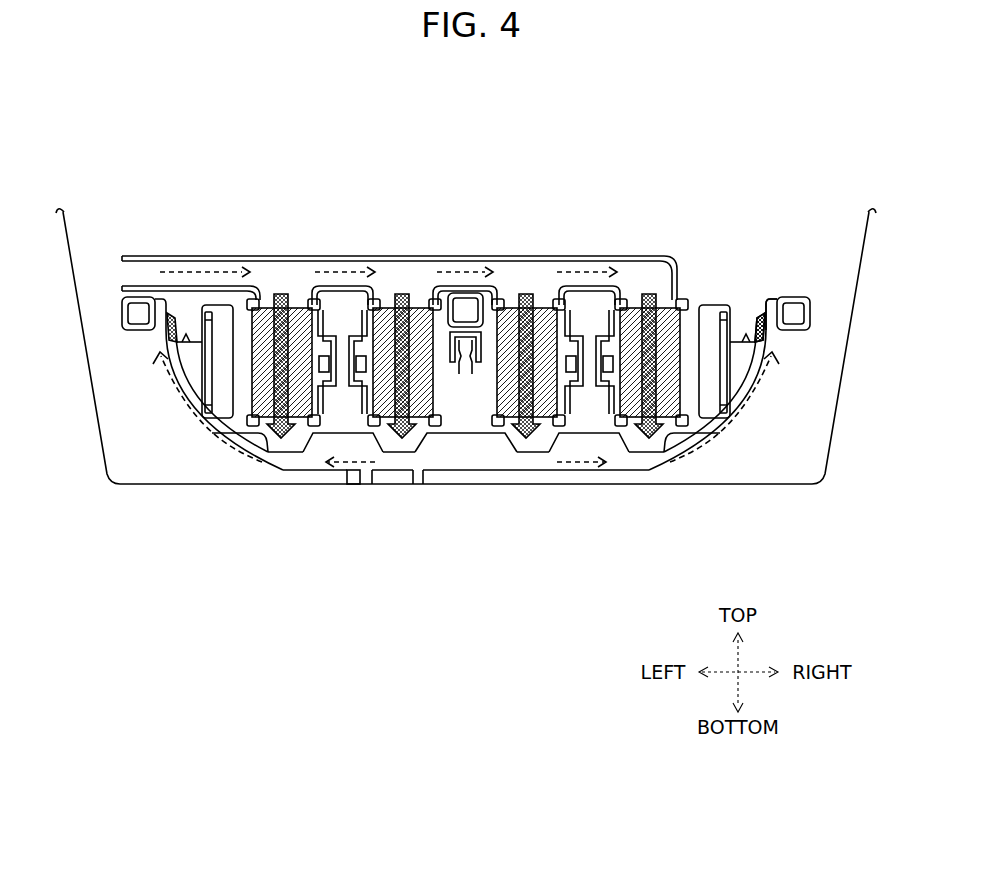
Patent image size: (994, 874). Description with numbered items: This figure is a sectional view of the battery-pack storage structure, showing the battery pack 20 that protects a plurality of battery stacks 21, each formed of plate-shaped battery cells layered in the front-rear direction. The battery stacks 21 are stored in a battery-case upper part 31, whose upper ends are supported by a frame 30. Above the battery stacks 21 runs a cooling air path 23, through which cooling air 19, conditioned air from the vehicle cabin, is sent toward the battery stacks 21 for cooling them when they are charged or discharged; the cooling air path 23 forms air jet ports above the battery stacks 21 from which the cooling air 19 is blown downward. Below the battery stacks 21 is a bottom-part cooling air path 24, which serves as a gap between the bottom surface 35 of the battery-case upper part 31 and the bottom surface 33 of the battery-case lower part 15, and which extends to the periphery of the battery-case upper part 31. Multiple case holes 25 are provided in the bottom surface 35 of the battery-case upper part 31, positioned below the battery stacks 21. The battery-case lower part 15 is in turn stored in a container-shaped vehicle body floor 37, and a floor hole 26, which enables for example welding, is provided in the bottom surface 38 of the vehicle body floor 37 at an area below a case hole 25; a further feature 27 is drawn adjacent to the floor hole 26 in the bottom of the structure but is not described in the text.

The battery-case lower part 15 is at (738, 440).
The cooling air 19 is at (190, 255).
The battery pack 20 is at (418, 183).
The battery stacks 21 is at (257, 299).
The cooling air path 23 is at (449, 280).
The bottom-part cooling air path 24 is at (487, 462).
The case holes 25 is at (290, 455).
The floor hole 26 is at (398, 472).
The slit 27 is at (366, 486).
The frame 30 is at (134, 332).
The battery-case upper part 31 is at (762, 322).
The bottom surface of the battery-case lower part 33 is at (352, 486).
The bottom surface of the battery-case upper part 35 is at (465, 472).
The vehicle body floor 37 is at (128, 486).
The bottom surface of the vehicle body floor 38 is at (330, 486).